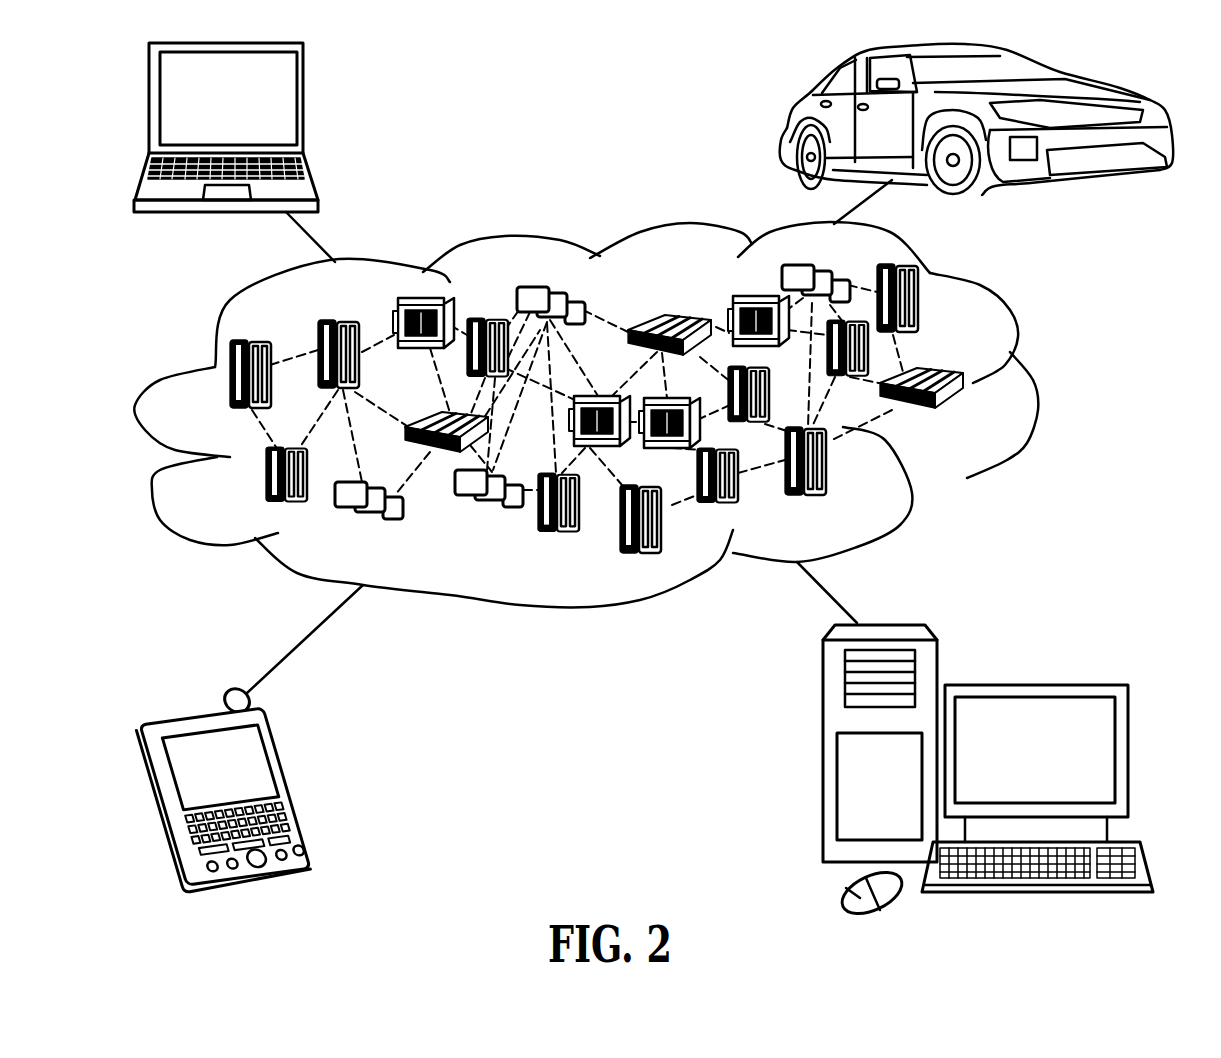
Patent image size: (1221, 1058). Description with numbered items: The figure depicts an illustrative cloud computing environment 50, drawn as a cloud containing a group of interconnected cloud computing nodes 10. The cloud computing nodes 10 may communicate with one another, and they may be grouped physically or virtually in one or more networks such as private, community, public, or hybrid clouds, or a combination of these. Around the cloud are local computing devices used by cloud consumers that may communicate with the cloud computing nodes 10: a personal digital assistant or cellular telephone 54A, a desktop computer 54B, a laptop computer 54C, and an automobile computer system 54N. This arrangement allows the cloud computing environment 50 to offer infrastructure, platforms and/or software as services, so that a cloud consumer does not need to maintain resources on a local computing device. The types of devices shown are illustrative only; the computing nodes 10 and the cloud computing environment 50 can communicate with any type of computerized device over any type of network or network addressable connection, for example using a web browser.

The cloud computing environment 50 is at (1036, 386).
The cloud computing nodes 10 is at (972, 421).
The personal digital assistant or cellular telephone 54A is at (294, 780).
The desktop computer 54B is at (1032, 684).
The laptop computer 54C is at (304, 110).
The automobile computer system 54N is at (788, 124).